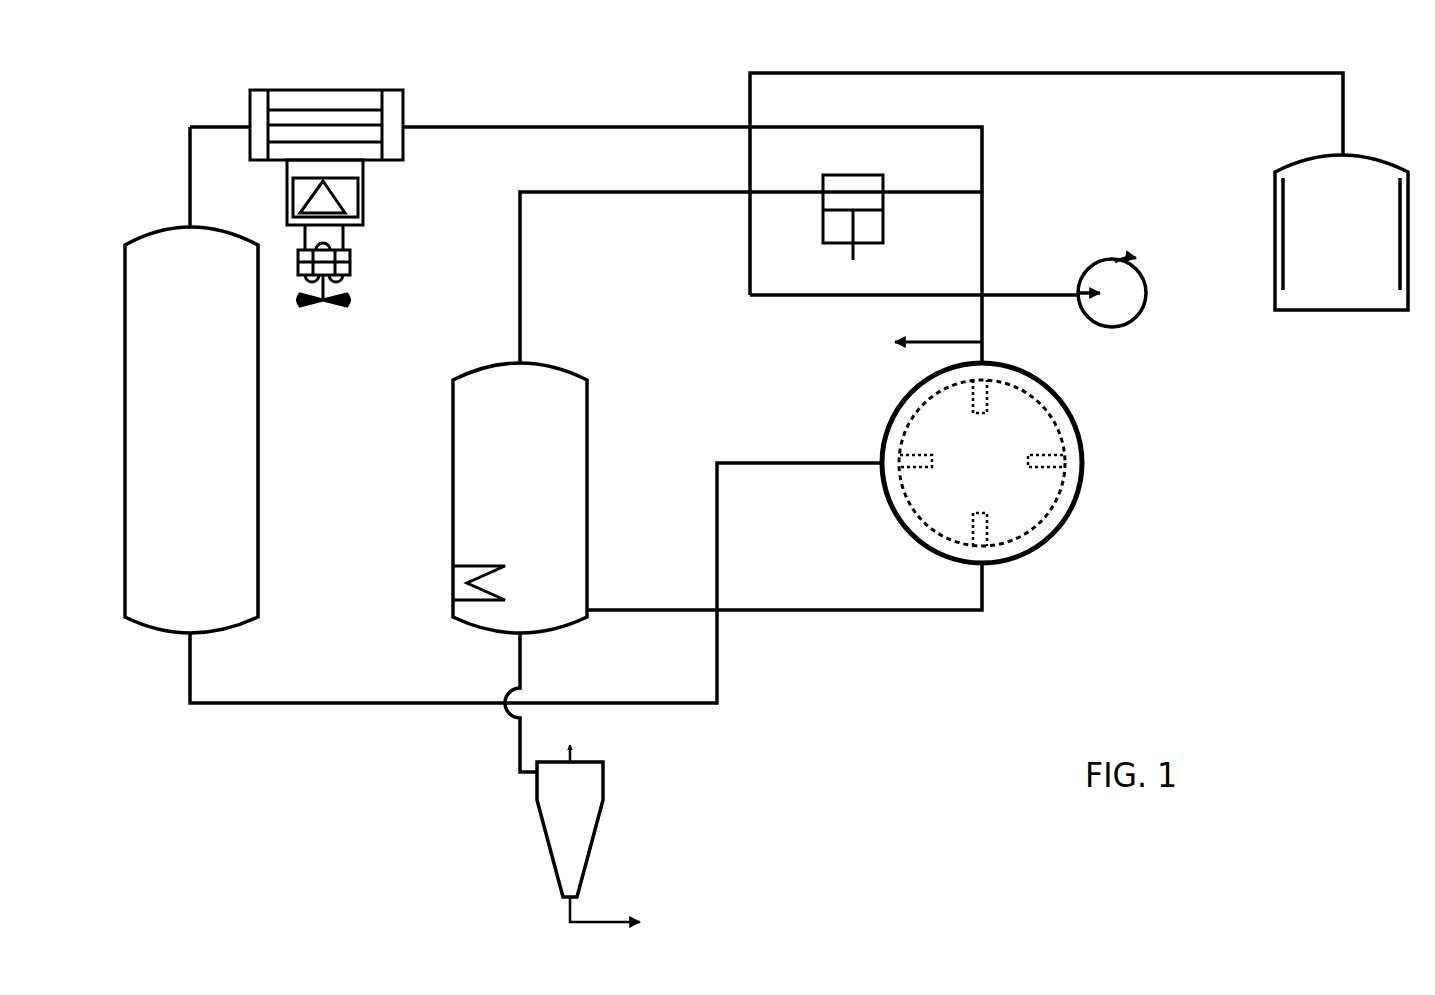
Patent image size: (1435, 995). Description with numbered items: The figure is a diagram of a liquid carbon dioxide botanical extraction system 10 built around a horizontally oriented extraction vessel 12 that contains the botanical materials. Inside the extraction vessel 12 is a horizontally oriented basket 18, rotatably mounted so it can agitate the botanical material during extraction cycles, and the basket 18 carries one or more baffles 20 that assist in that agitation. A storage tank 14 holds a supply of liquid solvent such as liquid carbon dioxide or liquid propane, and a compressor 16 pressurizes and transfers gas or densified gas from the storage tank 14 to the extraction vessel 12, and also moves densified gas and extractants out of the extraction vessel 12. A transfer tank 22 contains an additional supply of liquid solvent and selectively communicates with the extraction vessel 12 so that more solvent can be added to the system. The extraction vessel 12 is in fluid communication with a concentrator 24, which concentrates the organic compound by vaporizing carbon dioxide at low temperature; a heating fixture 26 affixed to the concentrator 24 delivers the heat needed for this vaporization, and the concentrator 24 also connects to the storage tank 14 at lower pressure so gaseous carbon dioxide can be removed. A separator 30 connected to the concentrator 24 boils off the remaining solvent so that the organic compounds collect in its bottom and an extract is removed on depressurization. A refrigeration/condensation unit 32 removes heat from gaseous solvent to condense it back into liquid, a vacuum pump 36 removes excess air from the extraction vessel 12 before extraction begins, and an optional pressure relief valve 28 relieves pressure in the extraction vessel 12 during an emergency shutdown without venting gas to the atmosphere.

The liquid carbon dioxide extraction system 10 is at (853, 728).
The extraction vessel 12 is at (1030, 468).
The storage tank 14 is at (258, 430).
The compressor 16 is at (884, 221).
The basket 18 is at (1053, 420).
The baffles 20 is at (920, 455).
The transfer tank 22 is at (1337, 310).
The concentrator 24 is at (588, 443).
The heating fixture 26 is at (479, 562).
The pressure relief valve 28 is at (928, 343).
The separator 30 is at (597, 830).
The refrigeration/condensation unit 32 is at (368, 207).
The vacuum pump 36 is at (1090, 266).